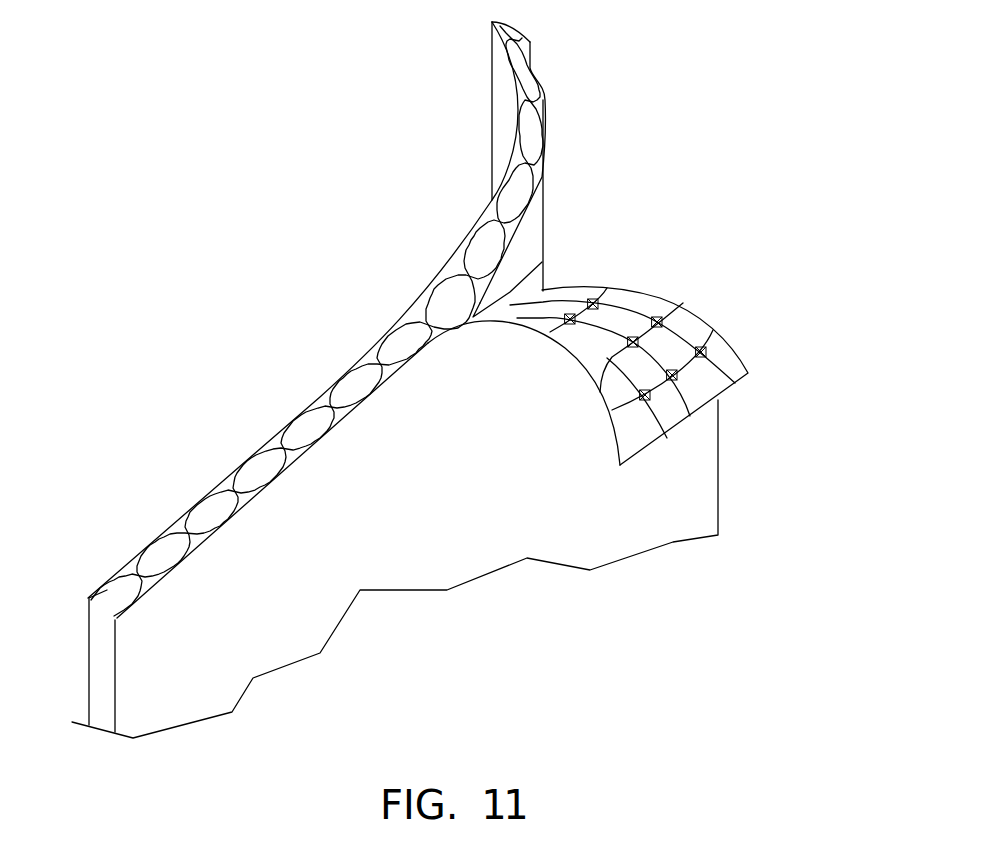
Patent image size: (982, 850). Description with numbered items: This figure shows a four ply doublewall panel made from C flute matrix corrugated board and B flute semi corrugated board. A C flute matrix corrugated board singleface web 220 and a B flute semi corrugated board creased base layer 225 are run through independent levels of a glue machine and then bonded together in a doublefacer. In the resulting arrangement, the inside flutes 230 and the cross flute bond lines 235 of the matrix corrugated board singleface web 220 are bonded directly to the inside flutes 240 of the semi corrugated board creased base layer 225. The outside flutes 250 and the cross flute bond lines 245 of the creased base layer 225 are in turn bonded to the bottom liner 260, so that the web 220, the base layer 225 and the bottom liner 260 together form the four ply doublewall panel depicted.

The C flute matrix corrugated board singleface web 220 is at (507, 137).
The B flute semi corrugated board creased base layer 225 is at (706, 385).
The inside flutes 230 is at (548, 173).
The cross flute bond lines 235 is at (540, 245).
The inside flutes 240 is at (642, 318).
The cross flute bond lines 245 is at (688, 345).
The outside flutes 250 is at (632, 442).
The bottom liner 260 is at (515, 490).